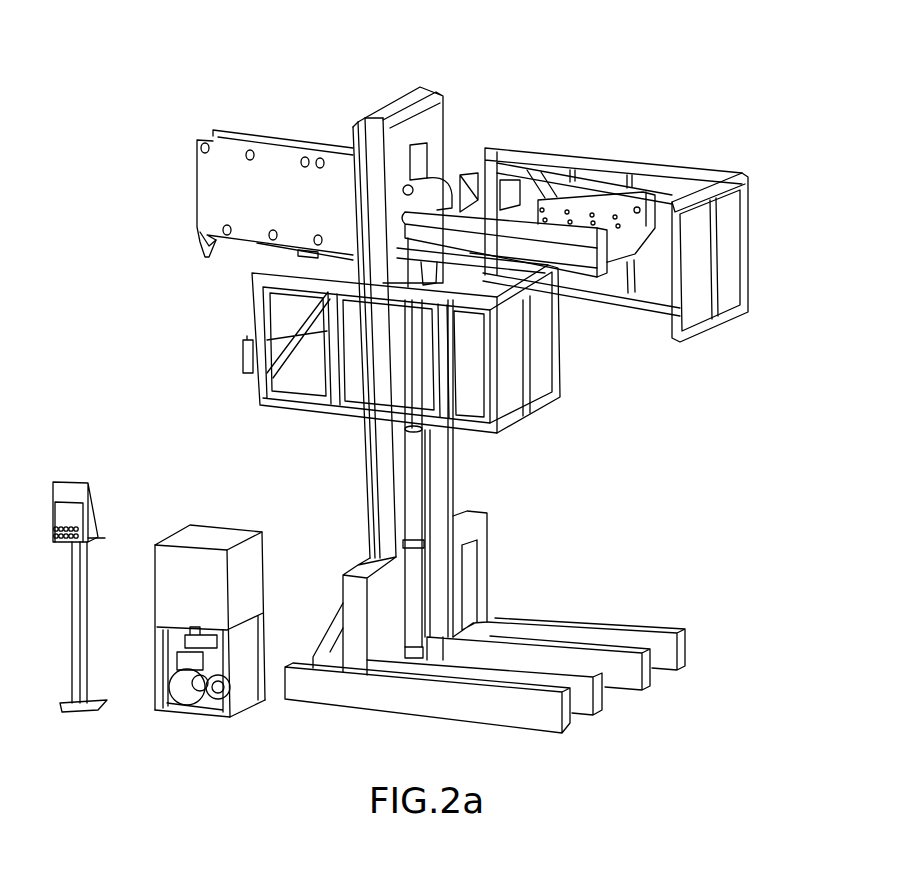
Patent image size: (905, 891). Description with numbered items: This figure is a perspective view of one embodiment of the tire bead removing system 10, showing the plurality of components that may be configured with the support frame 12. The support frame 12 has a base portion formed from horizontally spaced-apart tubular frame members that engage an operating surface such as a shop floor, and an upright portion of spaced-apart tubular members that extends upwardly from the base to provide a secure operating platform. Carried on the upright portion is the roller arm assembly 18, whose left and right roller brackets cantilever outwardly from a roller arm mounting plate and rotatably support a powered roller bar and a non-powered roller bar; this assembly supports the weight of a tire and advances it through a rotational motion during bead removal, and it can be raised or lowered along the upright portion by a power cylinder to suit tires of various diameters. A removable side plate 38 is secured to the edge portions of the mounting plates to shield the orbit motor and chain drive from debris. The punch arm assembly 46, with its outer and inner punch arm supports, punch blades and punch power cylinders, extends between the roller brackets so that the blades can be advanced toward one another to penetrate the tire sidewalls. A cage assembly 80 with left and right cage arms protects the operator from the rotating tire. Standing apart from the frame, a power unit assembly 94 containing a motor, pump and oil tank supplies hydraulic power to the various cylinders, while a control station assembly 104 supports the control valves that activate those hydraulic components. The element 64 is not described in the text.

The tire bead removing system 10 is at (100, 277).
The support frame 12 is at (458, 495).
The roller arm assembly 18 is at (398, 238).
The removable side plate 38 is at (362, 114).
The punch arm assembly 46 is at (590, 197).
The side plate 64 is at (290, 136).
The cage assembly 80 is at (754, 238).
The power unit assembly 94 is at (177, 531).
The control station assembly 104 is at (63, 603).